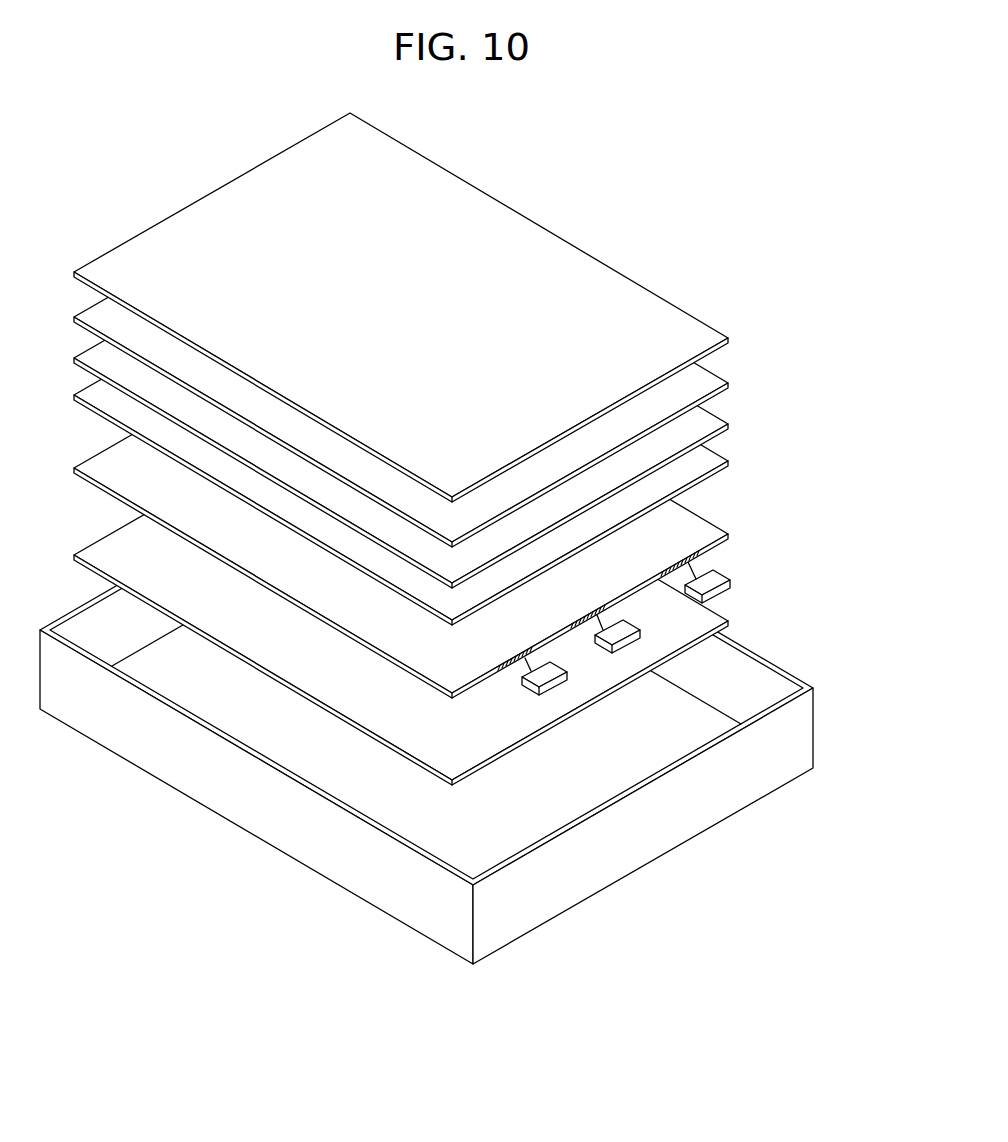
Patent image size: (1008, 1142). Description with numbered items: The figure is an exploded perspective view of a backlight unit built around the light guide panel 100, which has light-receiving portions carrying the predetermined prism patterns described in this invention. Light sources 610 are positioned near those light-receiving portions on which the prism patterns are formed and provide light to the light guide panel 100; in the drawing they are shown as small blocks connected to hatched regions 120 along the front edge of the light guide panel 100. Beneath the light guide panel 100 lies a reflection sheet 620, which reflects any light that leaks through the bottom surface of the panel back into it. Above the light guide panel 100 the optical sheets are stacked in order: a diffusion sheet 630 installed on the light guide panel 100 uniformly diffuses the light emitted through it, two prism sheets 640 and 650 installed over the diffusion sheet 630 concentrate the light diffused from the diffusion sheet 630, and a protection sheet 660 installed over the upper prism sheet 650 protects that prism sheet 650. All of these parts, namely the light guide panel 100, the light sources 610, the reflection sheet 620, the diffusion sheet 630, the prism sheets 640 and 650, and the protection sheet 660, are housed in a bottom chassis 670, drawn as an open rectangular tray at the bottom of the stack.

The protection sheet 660 is at (707, 328).
The prism sheet 650 is at (720, 383).
The prism sheet 640 is at (722, 423).
The diffusion sheet 630 is at (715, 462).
The light guide panel 100 is at (702, 523).
The pad portion 120 is at (503, 662).
The light sources 610 is at (730, 576).
The reflection sheet 620 is at (727, 618).
The bottom chassis 670 is at (802, 737).